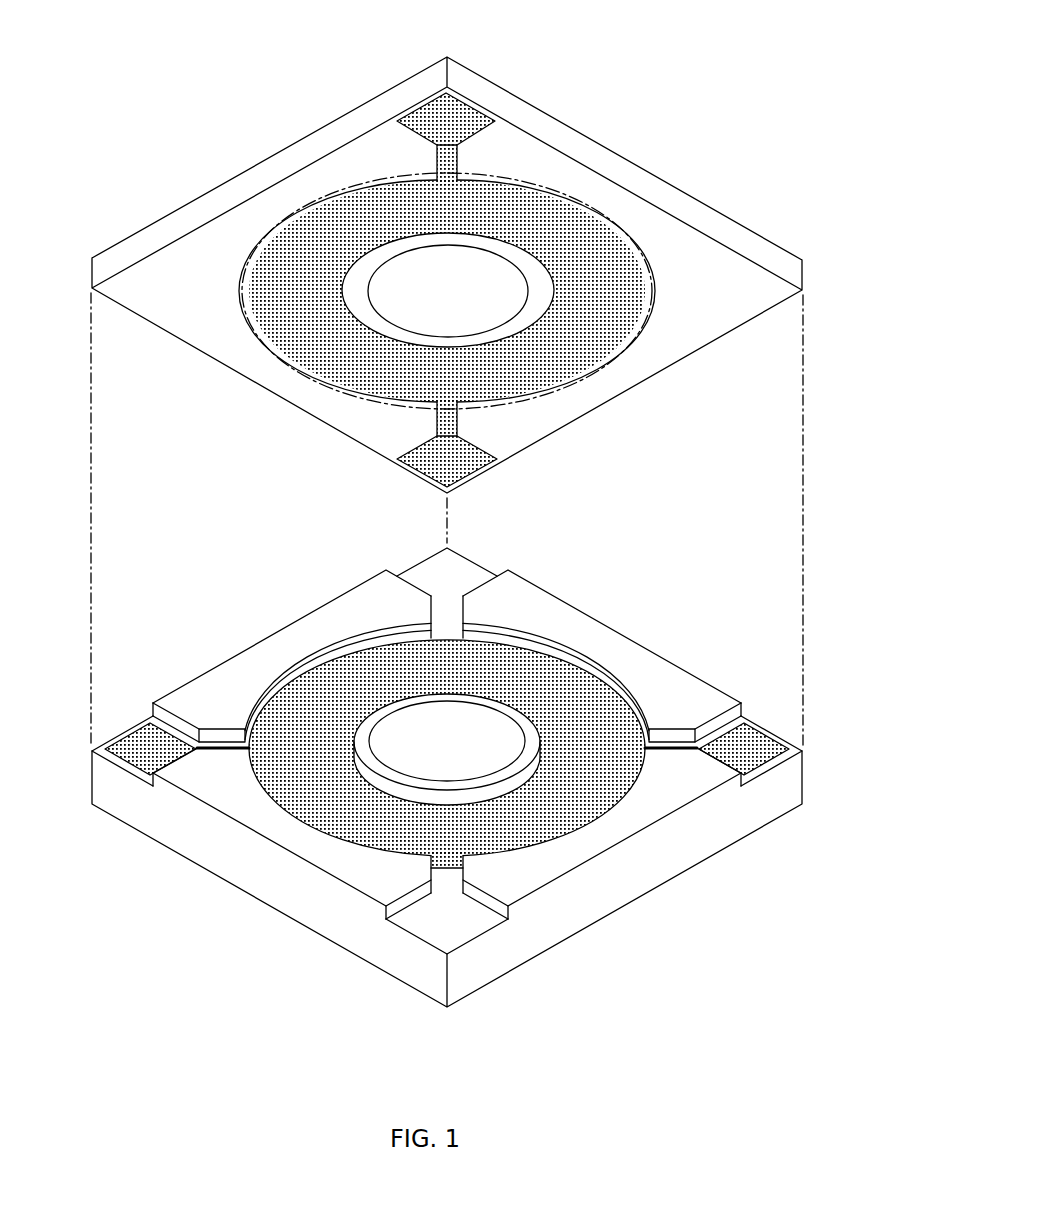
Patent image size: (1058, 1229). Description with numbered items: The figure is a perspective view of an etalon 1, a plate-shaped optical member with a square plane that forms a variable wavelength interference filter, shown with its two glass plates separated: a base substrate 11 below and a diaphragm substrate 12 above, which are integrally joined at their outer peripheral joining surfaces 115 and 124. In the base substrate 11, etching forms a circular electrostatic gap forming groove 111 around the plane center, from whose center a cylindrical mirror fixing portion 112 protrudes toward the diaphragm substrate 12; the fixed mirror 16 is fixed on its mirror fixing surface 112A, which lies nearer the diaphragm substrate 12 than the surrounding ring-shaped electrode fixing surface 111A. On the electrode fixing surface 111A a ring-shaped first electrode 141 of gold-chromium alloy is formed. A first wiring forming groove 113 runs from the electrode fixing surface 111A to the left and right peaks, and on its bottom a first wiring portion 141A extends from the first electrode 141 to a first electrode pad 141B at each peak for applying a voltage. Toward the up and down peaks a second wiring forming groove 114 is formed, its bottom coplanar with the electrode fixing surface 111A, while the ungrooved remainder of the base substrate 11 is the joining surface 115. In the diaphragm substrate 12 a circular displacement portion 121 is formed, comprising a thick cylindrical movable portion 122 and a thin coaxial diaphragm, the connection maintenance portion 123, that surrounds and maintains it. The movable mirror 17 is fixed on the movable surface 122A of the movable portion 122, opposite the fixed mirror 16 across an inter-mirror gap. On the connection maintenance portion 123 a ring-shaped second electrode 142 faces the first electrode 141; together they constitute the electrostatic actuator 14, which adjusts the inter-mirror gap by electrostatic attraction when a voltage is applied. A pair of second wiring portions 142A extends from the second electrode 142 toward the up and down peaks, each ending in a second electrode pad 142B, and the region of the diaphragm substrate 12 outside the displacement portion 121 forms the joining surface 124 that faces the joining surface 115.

The etalon 1 is at (672, 62).
The base substrate 11 is at (703, 862).
The diaphragm substrate 12 is at (703, 200).
The electrostatic actuator 14 is at (265, 478).
The fixed mirror 16 is at (503, 705).
The movable mirror 17 is at (503, 327).
The electrostatic gap forming groove 111 is at (543, 647).
The electrode fixing surface 111A is at (503, 640).
The mirror fixing portion 112 is at (353, 825).
The mirror fixing surface 112A is at (363, 755).
The first wiring forming groove 113 is at (685, 738).
The second wiring forming groove 114 is at (447, 612).
The joining surface 115 is at (648, 663).
The displacement portion 121 is at (283, 74).
The movable portion 122 is at (340, 283).
The movable surface 122A is at (357, 303).
The connection maintenance portion 123 is at (345, 190).
The joining surface 124 is at (680, 345).
The first electrode 141 is at (333, 653).
The first wiring portion 141A is at (662, 747).
The first electrode pad 141B is at (770, 770).
The second electrode 142 is at (333, 445).
The second wiring portion 142A is at (463, 160).
The second electrode pad 142B is at (462, 98).